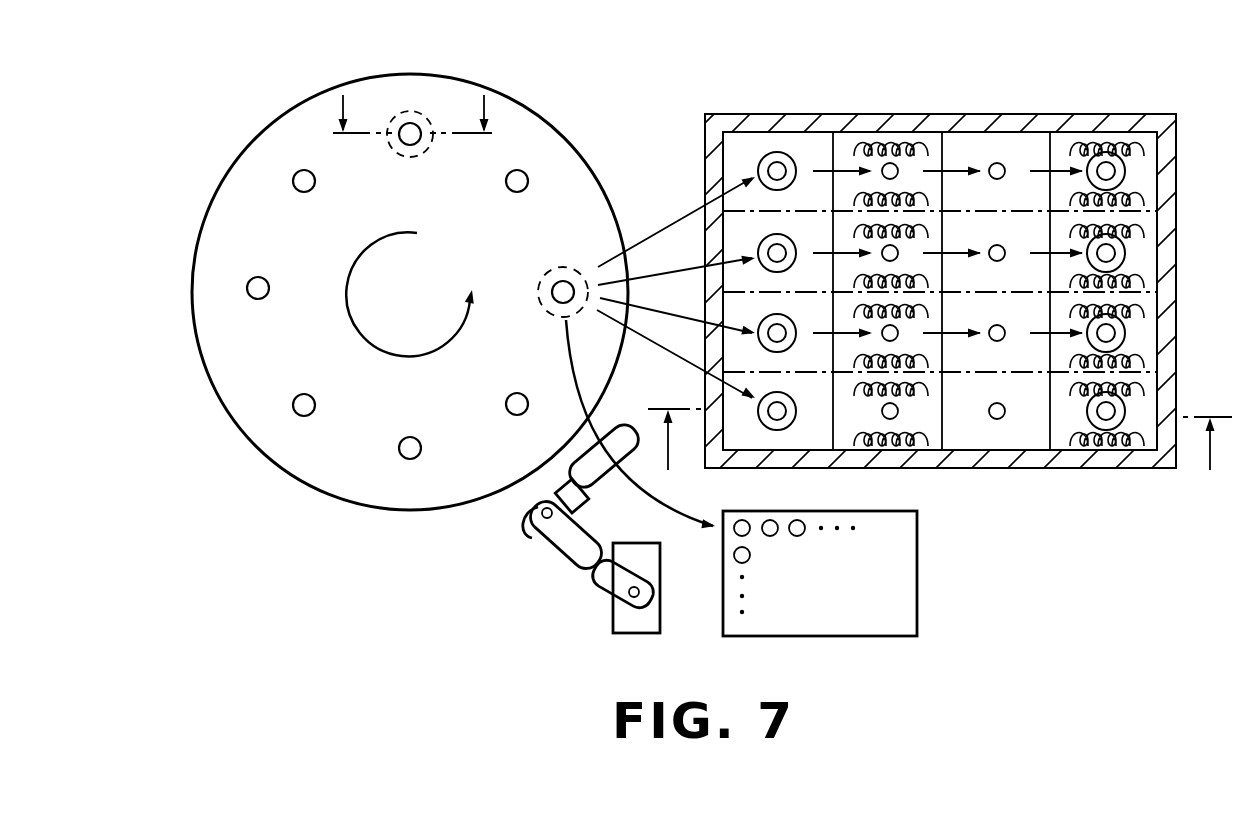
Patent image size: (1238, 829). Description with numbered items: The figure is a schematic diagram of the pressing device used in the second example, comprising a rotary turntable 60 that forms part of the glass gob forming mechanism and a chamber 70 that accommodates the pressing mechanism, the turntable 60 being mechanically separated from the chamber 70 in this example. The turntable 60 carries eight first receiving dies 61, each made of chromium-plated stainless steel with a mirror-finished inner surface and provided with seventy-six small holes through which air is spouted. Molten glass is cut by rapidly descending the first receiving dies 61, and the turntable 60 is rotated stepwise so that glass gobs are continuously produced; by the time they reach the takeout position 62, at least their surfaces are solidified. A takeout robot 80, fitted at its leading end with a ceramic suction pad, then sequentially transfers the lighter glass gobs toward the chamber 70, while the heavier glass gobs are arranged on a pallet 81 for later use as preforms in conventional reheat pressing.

The turntable 60 is at (540, 133).
The first receiving dies 61 is at (418, 128).
The takeout position 62 is at (600, 252).
The chamber 70 is at (882, 113).
The takeout robot 80 is at (565, 535).
The pallet 81 is at (908, 572).